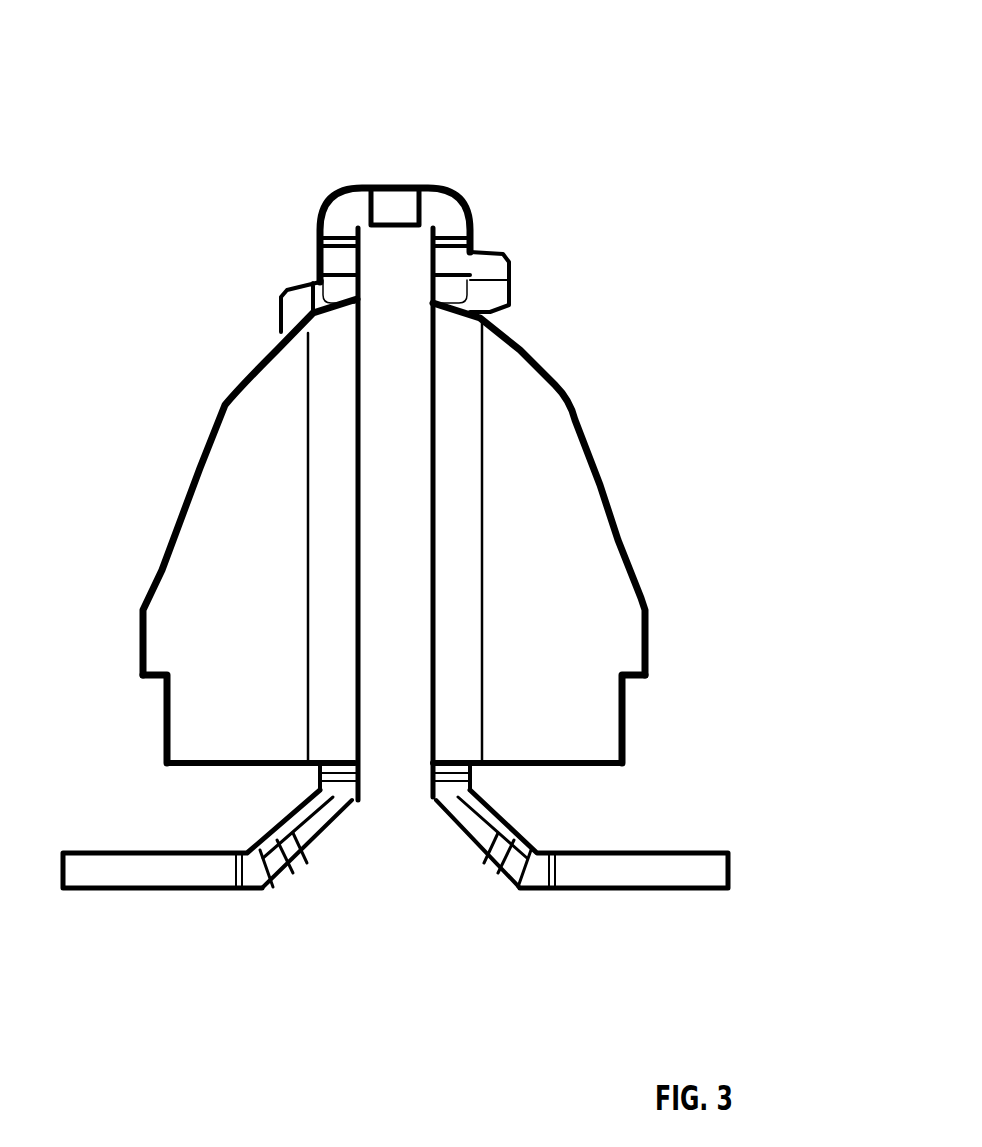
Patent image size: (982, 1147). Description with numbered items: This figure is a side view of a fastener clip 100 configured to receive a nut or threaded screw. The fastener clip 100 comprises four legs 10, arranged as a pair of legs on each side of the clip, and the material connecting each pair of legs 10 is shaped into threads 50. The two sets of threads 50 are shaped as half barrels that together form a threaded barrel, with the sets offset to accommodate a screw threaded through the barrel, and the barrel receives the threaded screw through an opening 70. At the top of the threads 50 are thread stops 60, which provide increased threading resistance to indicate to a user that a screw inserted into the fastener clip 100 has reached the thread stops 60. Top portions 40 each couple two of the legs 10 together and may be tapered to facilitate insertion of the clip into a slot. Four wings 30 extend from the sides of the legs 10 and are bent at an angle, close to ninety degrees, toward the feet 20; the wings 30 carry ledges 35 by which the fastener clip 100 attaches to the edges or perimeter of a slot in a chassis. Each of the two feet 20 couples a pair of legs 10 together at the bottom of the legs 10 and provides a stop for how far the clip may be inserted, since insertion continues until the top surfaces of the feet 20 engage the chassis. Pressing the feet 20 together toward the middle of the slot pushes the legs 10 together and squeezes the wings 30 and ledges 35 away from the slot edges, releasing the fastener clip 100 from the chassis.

The fastener clip 100 is at (633, 98).
The legs 10 is at (330, 375).
The feet 20 is at (150, 865).
The wings/paddles 30 is at (210, 550).
The ledges/cutouts 35 is at (140, 673).
The top portions 40 is at (335, 215).
The threads 50 is at (505, 297).
The thread stops 60 is at (390, 197).
The opening 70 is at (388, 873).